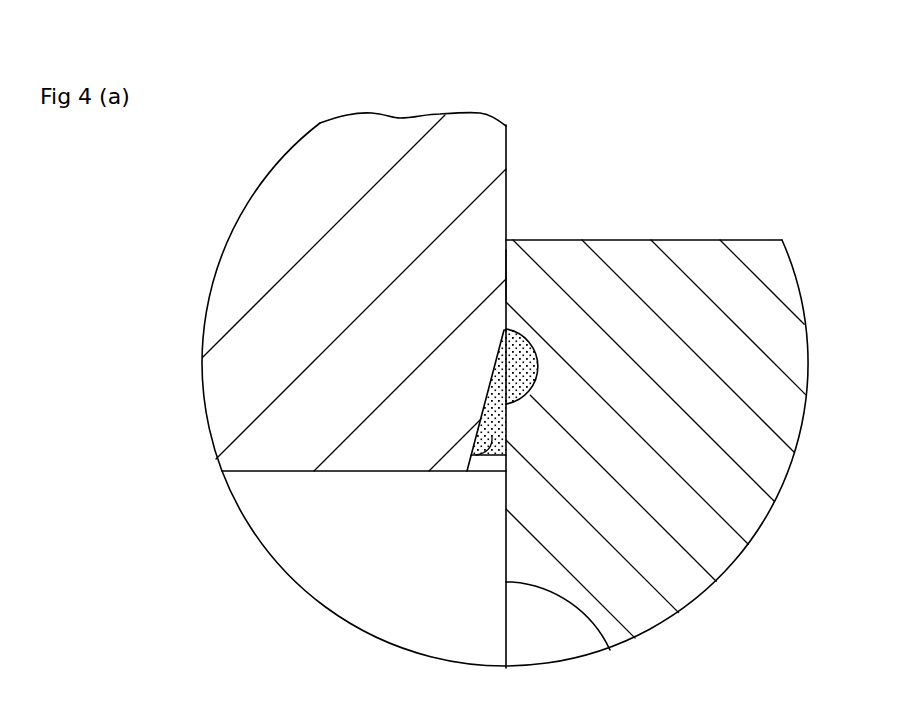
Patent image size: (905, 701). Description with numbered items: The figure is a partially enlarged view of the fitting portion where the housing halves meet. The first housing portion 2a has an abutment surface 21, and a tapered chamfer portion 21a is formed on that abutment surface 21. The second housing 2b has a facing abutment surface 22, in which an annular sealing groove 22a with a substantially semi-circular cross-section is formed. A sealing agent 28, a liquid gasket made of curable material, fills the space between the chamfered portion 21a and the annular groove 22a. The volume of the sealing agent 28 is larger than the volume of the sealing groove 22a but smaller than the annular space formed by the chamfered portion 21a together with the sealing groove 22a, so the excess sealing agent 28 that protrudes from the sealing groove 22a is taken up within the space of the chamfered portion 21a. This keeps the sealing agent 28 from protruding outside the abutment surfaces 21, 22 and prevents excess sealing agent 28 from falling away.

The first housing portion 2a is at (377, 130).
The second housing 2b is at (689, 253).
The abutment surface 21 is at (520, 316).
The tapered chamfer portion 21a is at (490, 458).
The abutment surface 22 is at (500, 276).
The annular sealing groove 22a is at (522, 364).
The sealing agent 28 is at (520, 380).